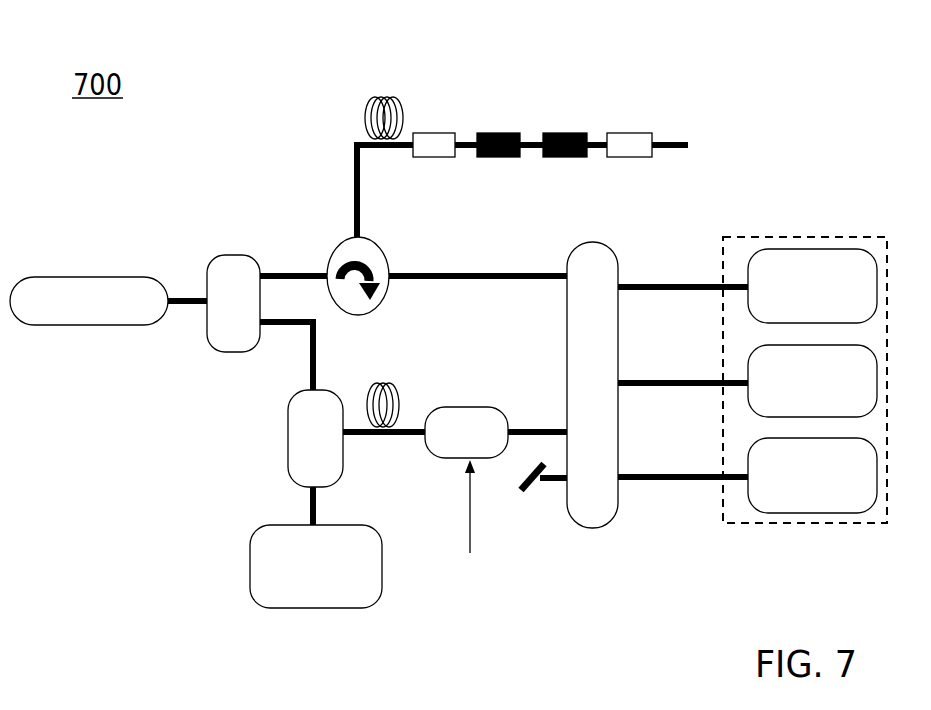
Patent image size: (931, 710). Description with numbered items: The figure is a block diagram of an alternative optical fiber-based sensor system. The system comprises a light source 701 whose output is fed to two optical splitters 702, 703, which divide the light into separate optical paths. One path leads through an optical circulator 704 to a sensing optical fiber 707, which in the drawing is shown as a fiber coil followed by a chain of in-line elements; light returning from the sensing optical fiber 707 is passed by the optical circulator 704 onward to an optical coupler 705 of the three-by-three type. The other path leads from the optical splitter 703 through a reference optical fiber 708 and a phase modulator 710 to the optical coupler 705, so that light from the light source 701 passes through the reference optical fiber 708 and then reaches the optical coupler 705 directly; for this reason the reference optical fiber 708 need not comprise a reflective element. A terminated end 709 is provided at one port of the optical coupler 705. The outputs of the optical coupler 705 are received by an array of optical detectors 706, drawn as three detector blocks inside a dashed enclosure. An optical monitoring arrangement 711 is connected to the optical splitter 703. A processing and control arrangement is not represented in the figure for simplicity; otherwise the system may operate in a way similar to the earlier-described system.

The light source 701 is at (89, 265).
The optical splitter 702 is at (237, 266).
The optical splitter 703 is at (265, 438).
The optical circulator 704 is at (370, 247).
The optical coupler 705 is at (601, 353).
The array of optical detectors 706 is at (805, 341).
The sensing optical fiber 707 is at (508, 86).
The reference optical fiber 708 is at (375, 442).
The terminated end 709 is at (541, 512).
The phase modulator 710 is at (474, 462).
The optical monitoring arrangement 711 is at (316, 602).